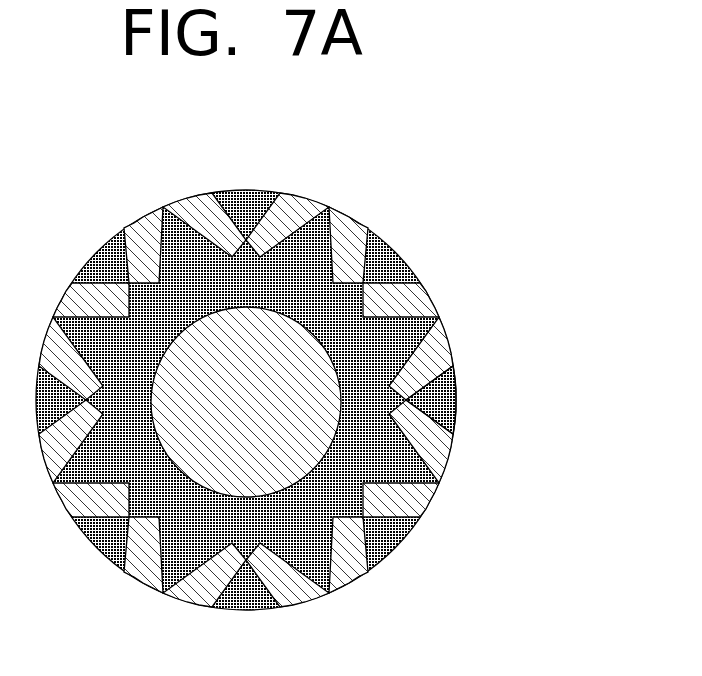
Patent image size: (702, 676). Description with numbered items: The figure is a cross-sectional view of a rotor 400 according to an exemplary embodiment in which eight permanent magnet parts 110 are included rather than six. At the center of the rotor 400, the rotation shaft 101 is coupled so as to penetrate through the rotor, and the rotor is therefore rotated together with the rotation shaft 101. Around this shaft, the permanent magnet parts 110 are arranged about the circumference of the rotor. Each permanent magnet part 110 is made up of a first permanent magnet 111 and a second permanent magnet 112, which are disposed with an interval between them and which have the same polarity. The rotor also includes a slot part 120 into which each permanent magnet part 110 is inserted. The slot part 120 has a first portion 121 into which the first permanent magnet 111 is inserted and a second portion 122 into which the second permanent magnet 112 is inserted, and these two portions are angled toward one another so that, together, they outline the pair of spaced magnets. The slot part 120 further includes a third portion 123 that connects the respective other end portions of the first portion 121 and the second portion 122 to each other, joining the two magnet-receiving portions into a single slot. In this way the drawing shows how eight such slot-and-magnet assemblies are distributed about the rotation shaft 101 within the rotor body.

The optical fiber cable cross-section 400 is at (193, 173).
The permanent magnet part 110 is at (301, 396).
The first permanent magnet 111 is at (353, 237).
The second permanent magnet 112 is at (410, 293).
The slot part 120 is at (320, 400).
The first portion 121 is at (421, 346).
The second portion 122 is at (423, 447).
The third portion 123 is at (409, 399).
The rotation shaft 101 is at (263, 410).